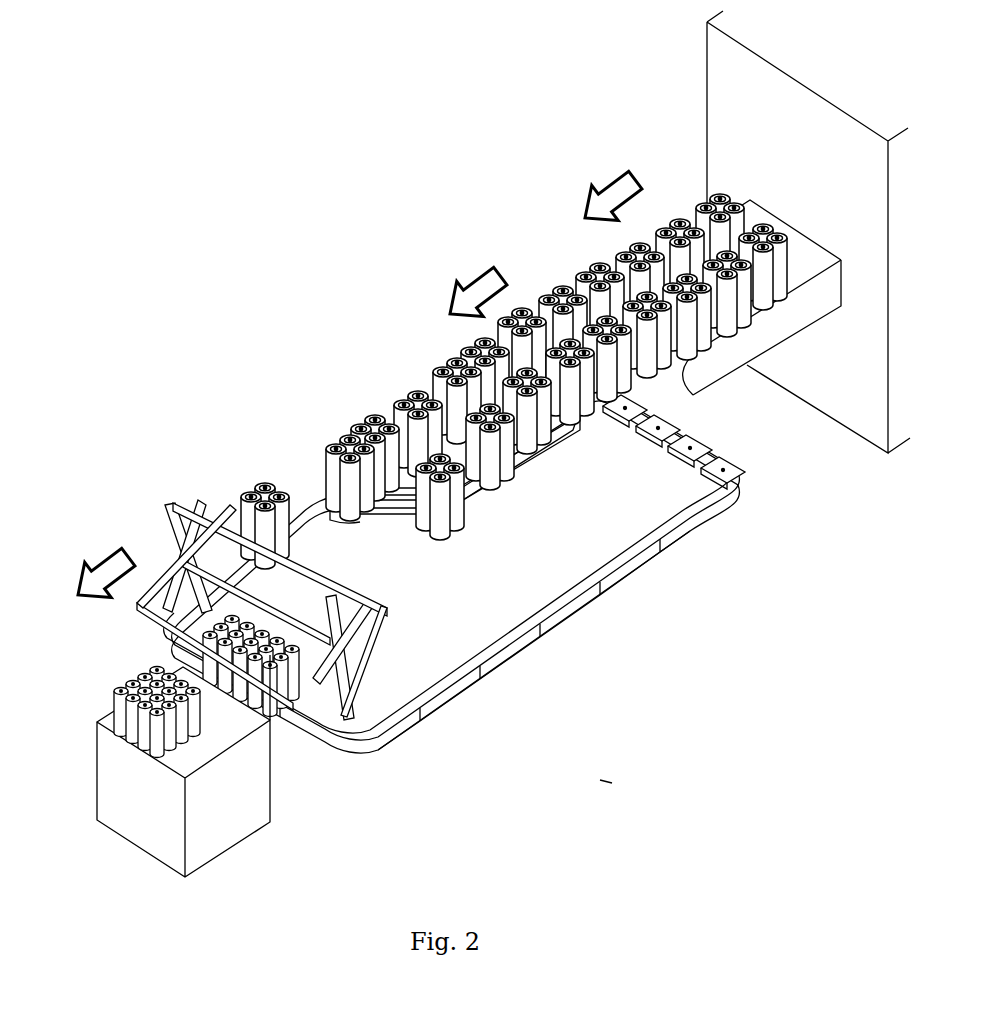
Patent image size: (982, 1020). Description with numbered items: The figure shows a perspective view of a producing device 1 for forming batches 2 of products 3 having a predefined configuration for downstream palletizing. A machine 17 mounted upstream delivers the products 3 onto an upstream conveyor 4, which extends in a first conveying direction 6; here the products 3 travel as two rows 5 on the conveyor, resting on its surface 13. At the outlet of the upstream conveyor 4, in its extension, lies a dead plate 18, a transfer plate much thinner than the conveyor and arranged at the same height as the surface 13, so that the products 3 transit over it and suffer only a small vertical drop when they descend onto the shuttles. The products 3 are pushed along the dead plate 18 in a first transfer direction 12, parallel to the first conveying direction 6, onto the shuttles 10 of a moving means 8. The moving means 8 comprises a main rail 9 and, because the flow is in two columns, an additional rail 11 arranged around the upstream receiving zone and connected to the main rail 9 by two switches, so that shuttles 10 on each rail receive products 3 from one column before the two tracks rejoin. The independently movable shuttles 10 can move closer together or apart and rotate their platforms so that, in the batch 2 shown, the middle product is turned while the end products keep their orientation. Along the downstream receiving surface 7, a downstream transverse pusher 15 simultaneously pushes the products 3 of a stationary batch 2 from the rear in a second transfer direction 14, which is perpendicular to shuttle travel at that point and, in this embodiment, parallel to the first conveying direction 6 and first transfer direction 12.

The producing device 1 is at (612, 783).
The batches 2 is at (293, 735).
The products 3 is at (267, 470).
The upstream conveyor 4 is at (801, 330).
The row 5 is at (738, 199).
The first conveying direction 6 is at (612, 193).
The downstream receiving surface 7 is at (118, 722).
The moving means 8 is at (451, 618).
The main rail 9 is at (470, 676).
The shuttles 10 is at (700, 477).
The additional rail 11 is at (405, 505).
The first transfer direction 12 is at (478, 300).
The surface of the upstream conveyor 13 is at (806, 257).
The second transfer direction 14 is at (105, 568).
The downstream transverse pusher 15 is at (162, 487).
The machine 17 is at (905, 458).
The dead plate 18 is at (652, 384).